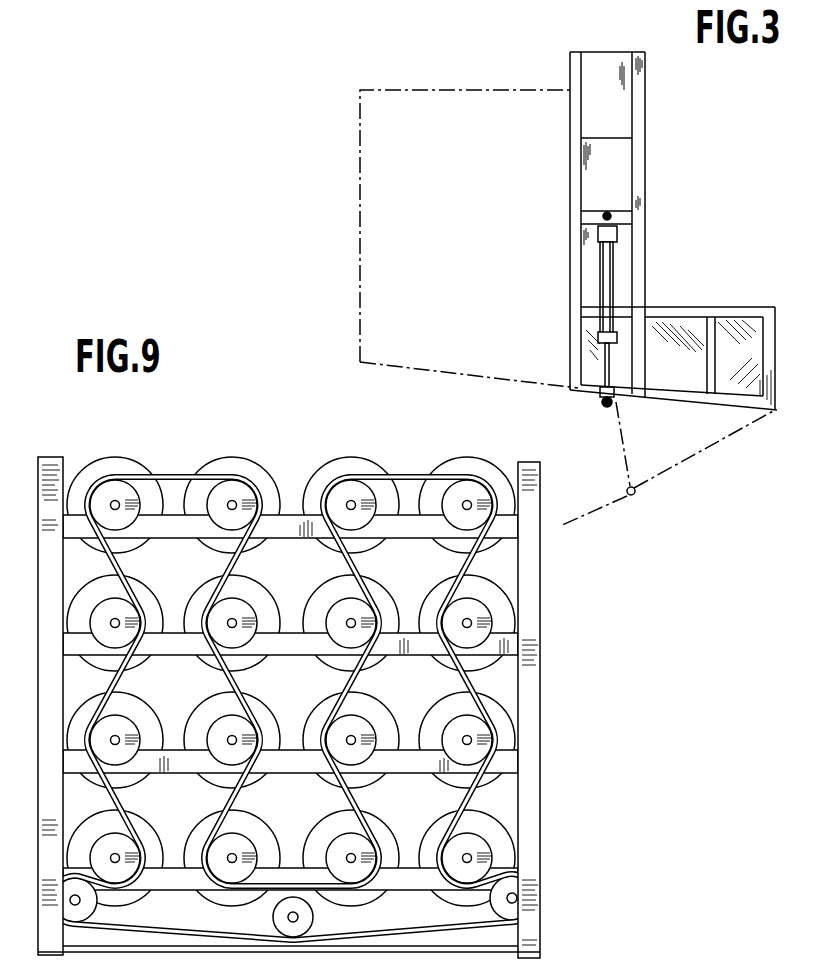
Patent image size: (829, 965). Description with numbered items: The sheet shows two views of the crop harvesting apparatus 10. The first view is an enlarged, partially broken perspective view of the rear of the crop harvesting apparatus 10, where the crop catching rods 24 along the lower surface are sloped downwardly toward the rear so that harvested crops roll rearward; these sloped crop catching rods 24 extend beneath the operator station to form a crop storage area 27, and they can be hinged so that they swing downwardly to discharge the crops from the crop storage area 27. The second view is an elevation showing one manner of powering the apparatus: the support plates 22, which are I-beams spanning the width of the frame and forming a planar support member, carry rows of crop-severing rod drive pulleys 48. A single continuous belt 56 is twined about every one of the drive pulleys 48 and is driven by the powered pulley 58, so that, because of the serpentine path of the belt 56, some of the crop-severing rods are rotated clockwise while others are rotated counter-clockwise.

In FIG. 3, the crop harvesting apparatus 10 is at (488, 97).
In FIG. 3, the crop catching rods 24 is at (458, 375).
In FIG. 3, the crop storage area 27 is at (733, 317).
In FIG. 9, the support plates 22 is at (283, 527).
In FIG. 9, the crop-severing rod drive pulleys 48 is at (123, 520).
In FIG. 9, the belt 56 is at (182, 480).
In FIG. 9, the powered pulley 58 is at (287, 907).